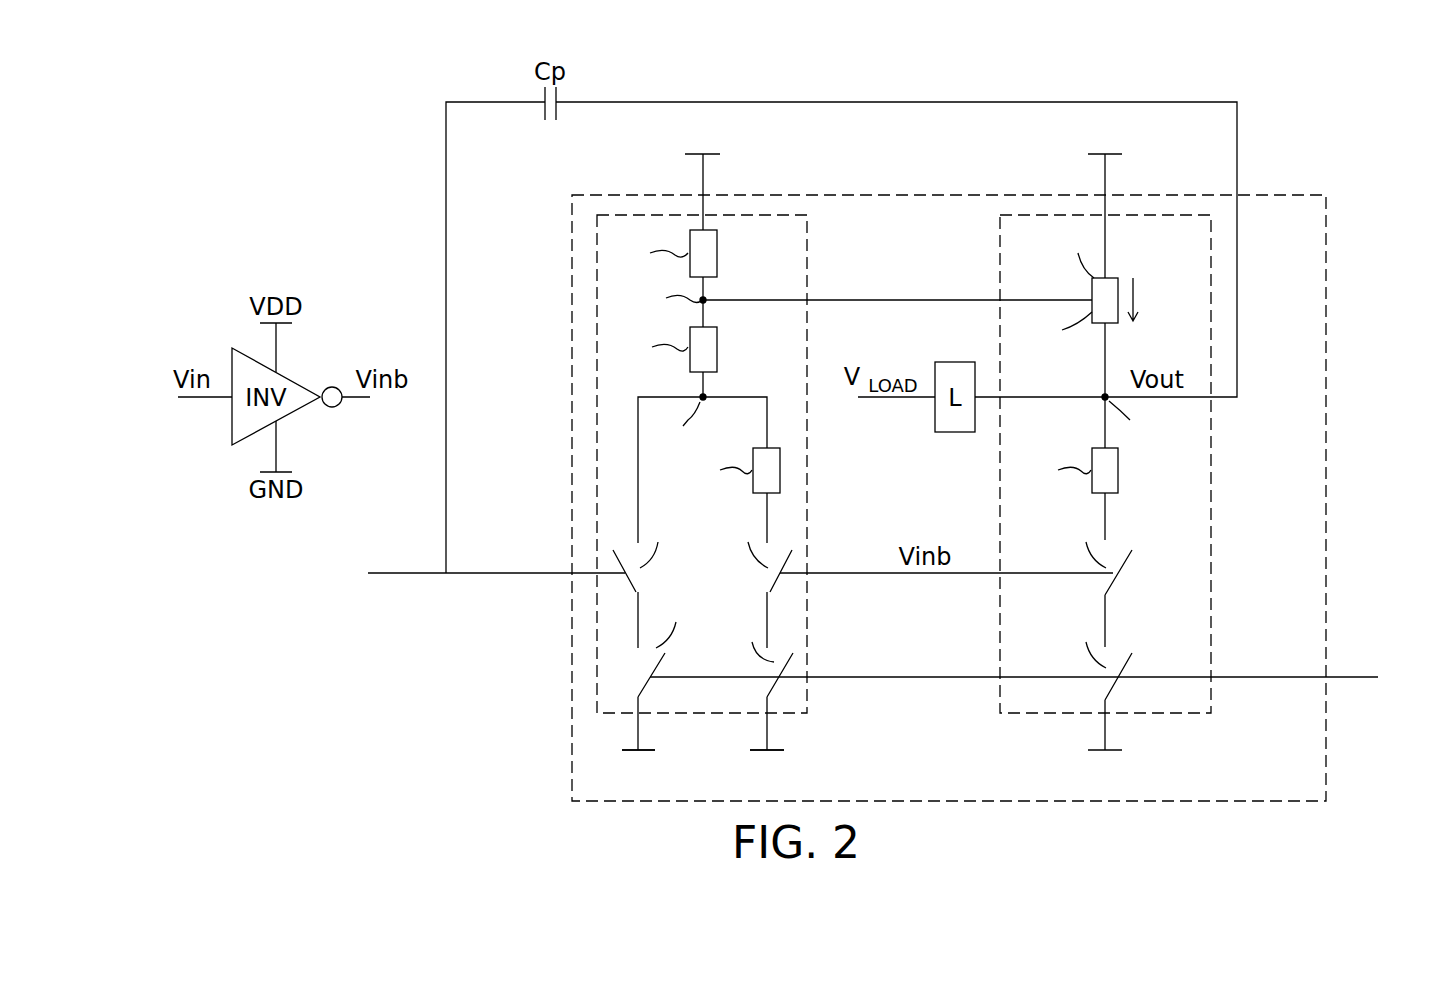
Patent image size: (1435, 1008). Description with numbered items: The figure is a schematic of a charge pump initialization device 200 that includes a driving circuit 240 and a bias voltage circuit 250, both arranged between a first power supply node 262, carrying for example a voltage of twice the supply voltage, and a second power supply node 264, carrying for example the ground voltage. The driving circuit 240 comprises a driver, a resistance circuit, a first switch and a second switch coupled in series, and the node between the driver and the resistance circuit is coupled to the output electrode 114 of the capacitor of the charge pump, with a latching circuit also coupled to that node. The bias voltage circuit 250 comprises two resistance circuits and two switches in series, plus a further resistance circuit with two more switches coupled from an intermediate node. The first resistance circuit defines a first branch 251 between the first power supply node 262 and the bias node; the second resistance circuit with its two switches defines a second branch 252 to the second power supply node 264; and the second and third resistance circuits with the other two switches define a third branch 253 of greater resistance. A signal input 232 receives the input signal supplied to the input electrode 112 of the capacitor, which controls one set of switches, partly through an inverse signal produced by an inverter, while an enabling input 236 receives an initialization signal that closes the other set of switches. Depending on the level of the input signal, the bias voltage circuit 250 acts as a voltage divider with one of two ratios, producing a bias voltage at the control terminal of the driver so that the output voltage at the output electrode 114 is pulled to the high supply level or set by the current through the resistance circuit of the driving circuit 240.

The input electrode 112 is at (543, 112).
The output electrode 114 is at (558, 112).
The charge pump initialization device 200 is at (1326, 464).
The signal input 232 is at (497, 578).
The enabling input 236 is at (1362, 680).
The driving circuit 240 is at (1211, 464).
The bias voltage circuit 250 is at (807, 255).
The first branch 251 is at (560, 153).
The second branch 252 is at (560, 303).
The third branch 253 is at (706, 302).
The first power supply node 262 is at (708, 158).
The second power supply node 264 is at (760, 748).